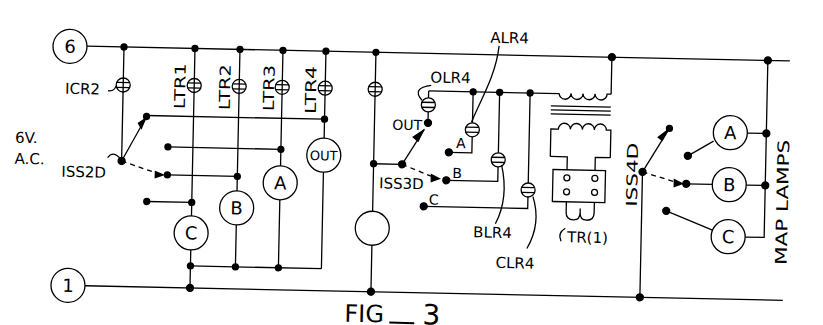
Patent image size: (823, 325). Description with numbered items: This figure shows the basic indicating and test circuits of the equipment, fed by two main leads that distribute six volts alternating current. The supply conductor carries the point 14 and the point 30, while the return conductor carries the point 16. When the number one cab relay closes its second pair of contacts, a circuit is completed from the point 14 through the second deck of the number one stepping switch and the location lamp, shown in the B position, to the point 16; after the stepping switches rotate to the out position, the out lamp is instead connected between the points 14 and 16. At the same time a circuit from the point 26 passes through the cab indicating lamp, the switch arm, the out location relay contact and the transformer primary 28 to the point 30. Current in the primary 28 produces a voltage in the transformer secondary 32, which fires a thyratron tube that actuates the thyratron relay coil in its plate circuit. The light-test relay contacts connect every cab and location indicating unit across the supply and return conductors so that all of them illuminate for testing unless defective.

The point on conductor 6 14 is at (124, 47).
The point on conductor 1 16 is at (197, 288).
The point of the cab indicating circuit 26 is at (377, 285).
The transformer primary 28 is at (613, 85).
The point on conductor 6 30 is at (612, 47).
The transformer secondary 32 is at (613, 120).